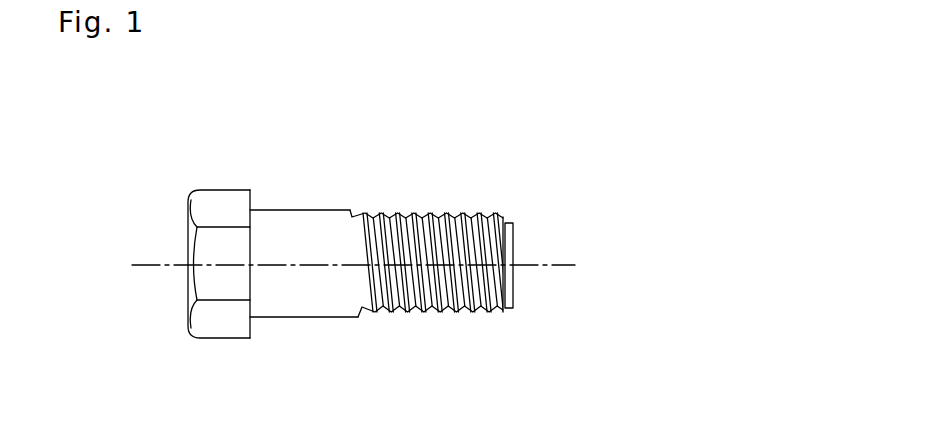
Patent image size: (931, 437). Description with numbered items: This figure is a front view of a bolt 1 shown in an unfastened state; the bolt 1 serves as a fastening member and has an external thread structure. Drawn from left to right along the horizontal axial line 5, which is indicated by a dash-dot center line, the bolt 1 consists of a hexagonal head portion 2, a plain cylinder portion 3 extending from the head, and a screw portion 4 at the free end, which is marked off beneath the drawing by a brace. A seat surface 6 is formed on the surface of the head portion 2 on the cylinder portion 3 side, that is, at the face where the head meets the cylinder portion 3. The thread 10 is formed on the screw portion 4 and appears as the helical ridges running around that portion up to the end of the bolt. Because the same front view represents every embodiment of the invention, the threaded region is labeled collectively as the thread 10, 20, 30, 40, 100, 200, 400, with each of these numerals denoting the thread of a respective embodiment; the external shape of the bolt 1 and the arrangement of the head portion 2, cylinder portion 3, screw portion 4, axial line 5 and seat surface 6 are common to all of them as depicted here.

The bolt 1 is at (450, 116).
The head portion 2 is at (210, 197).
The cylinder portion 3 is at (288, 215).
The screw portion 4 is at (361, 333).
The axial line 5 is at (148, 262).
The seat surface 6 is at (252, 200).
The thread 10 is at (500, 210).
The thread 20 is at (431, 263).
The thread 30 is at (431, 263).
The thread 40 is at (431, 263).
The thread 100 is at (431, 263).
The thread 200 is at (431, 263).
The thread 400 is at (431, 263).